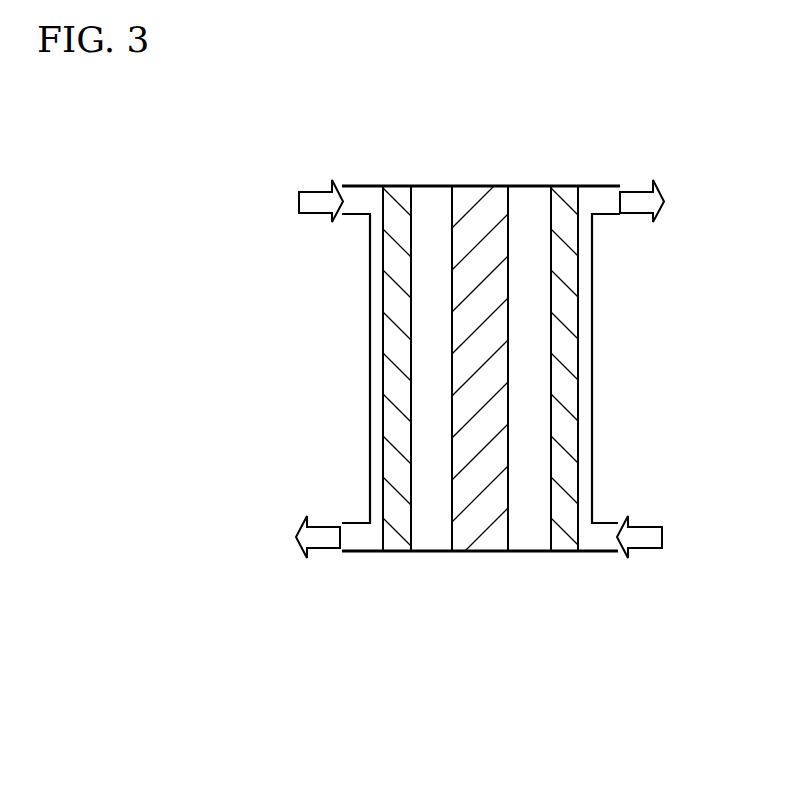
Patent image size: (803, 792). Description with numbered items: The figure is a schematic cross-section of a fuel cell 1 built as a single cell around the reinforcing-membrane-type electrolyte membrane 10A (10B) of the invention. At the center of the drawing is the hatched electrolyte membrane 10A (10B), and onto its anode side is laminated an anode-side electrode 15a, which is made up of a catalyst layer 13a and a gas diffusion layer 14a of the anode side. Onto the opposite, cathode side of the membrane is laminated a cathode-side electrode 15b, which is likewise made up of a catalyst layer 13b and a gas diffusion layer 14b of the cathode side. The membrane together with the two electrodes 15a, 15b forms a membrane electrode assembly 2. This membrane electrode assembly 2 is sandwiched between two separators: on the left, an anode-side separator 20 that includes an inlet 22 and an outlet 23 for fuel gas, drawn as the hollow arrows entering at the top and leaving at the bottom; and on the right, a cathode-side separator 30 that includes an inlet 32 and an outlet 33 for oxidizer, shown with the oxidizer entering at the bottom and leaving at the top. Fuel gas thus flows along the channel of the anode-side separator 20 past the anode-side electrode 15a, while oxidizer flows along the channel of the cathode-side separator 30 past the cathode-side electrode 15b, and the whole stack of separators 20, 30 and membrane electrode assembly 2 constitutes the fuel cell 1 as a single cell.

The fuel cell 1 is at (686, 134).
The membrane electrode assembly 2 is at (457, 164).
The anode-side separator 20 is at (370, 323).
The inlet of fuel gas 22 is at (354, 187).
The outlet of fuel gas 23 is at (356, 533).
The cathode-side separator 30 is at (592, 331).
The inlet of oxidizer 32 is at (600, 532).
The outlet of oxidizer 33 is at (594, 187).
The reinforcing-membrane-type electrolyte membrane 10A is at (483, 547).
The reinforcing-membrane-type electrolyte membrane 10B is at (477, 429).
The catalyst layer of anode side 13a is at (428, 542).
The catalyst layer of cathode side 13b is at (522, 542).
The gas diffusion layer of anode side 14a is at (395, 545).
The gas diffusion layer of cathode side 14b is at (560, 545).
The anode-side electrode 15a is at (430, 640).
The cathode-side electrode 15b is at (632, 640).